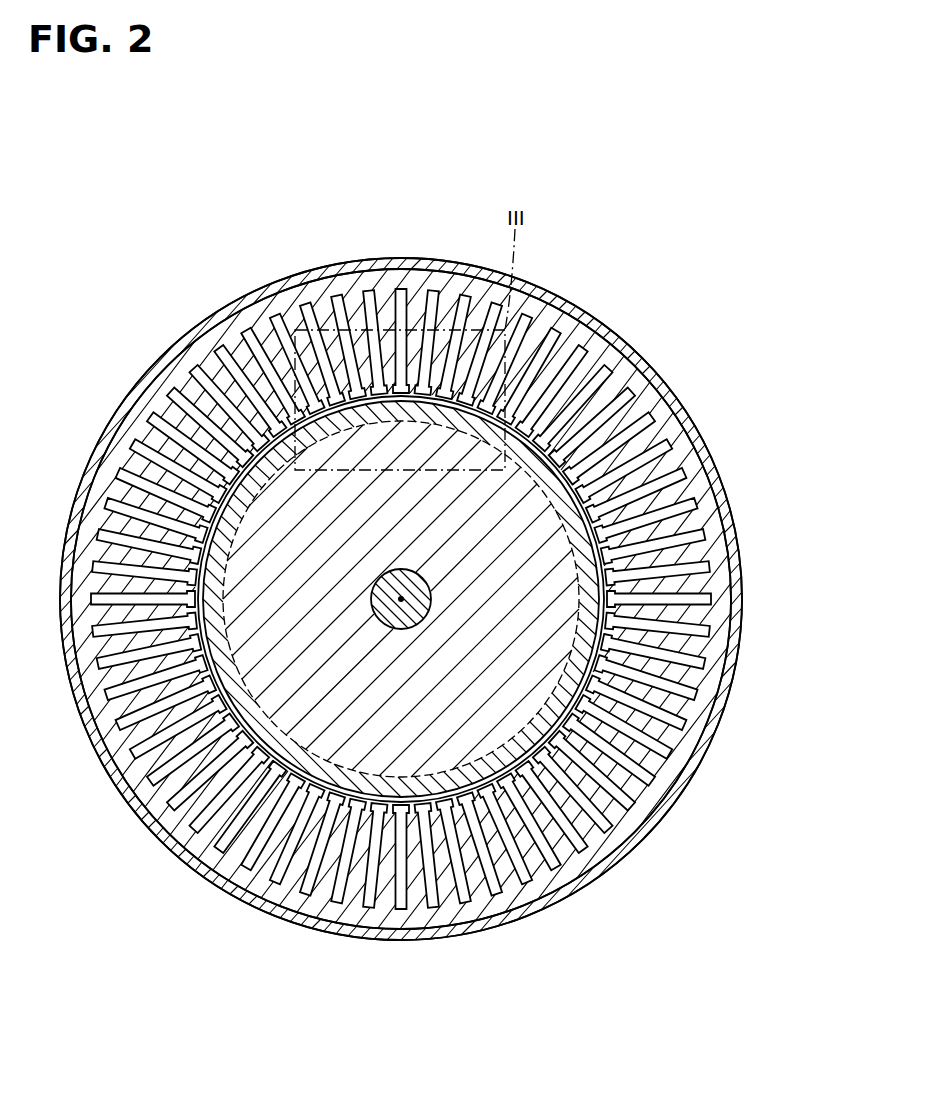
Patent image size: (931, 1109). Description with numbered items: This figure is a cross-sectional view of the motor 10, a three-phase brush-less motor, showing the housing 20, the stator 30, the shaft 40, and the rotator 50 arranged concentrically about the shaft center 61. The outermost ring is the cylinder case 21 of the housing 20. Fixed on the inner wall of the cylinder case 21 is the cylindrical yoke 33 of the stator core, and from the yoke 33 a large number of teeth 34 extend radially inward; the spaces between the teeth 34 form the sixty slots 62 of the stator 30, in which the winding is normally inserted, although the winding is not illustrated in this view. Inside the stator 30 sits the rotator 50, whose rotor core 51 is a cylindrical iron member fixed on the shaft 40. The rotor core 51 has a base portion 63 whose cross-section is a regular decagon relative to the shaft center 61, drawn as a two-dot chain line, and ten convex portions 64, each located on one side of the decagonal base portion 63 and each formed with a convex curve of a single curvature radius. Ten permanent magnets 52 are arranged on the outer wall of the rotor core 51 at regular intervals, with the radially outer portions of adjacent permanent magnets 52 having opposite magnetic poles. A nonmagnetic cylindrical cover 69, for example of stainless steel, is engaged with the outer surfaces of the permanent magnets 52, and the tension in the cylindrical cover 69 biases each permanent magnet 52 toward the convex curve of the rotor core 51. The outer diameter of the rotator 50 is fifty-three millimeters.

The motor 10 is at (575, 278).
The housing 20 is at (118, 797).
The cylinder case 21 is at (150, 818).
The stator 30 is at (100, 462).
The yoke 33 is at (128, 423).
The teeth 34 is at (217, 422).
The shaft 40 is at (195, 630).
The rotator 50 is at (200, 565).
The rotor core 51 is at (285, 589).
The permanent magnets 52 is at (383, 338).
The shaft center 61 is at (205, 596).
The slots 62 is at (193, 372).
The base portion 63 is at (313, 337).
The convex portions 64 is at (415, 338).
The cylindrical cover 69 is at (203, 537).